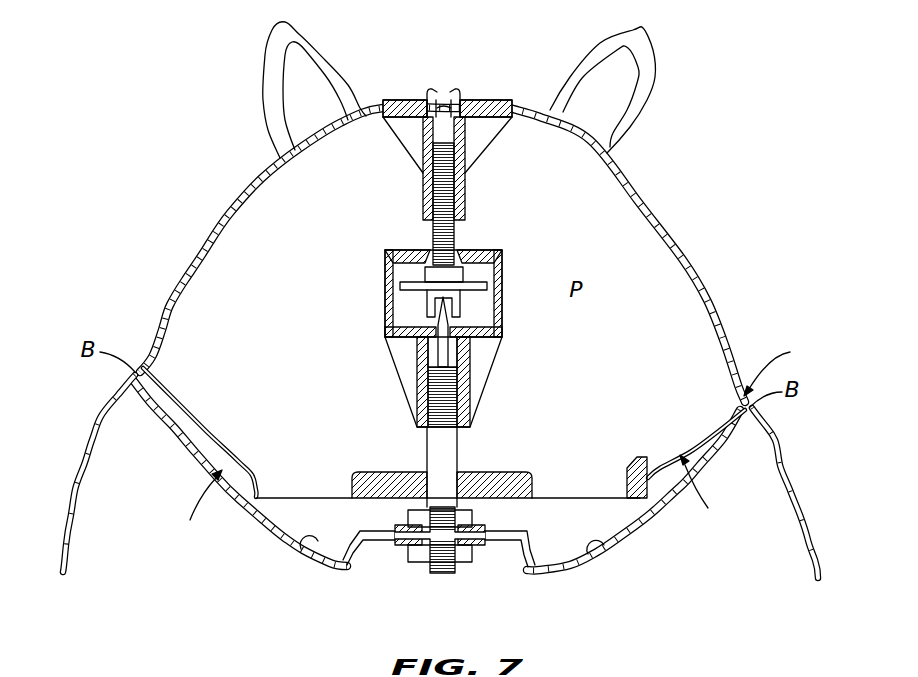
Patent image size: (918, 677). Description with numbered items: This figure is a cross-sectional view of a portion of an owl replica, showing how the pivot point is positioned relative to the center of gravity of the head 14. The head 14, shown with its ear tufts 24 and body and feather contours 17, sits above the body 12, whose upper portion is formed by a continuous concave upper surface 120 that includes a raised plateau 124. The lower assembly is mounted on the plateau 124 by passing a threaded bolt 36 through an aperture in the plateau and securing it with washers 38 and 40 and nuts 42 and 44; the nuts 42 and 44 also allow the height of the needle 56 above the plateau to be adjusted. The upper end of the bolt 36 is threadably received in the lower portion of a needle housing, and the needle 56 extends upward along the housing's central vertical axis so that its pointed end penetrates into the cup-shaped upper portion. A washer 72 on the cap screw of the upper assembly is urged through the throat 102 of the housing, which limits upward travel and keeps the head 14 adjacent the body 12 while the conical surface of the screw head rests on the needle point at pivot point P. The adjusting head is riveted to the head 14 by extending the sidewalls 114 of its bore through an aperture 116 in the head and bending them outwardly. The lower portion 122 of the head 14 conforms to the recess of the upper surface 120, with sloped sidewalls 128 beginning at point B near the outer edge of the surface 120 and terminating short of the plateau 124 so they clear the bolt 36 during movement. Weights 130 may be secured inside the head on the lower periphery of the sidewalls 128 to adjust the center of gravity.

The body 12 is at (805, 478).
The head 14 is at (703, 256).
The body and feather contours 17 is at (143, 355).
The ear tufts 24 is at (320, 56).
The threaded bolt 36 is at (442, 575).
The washer 38 is at (487, 530).
The washer 40 is at (470, 550).
The nut 42 is at (410, 520).
The nut 44 is at (412, 562).
The needle 56 is at (457, 352).
The washer 72 is at (483, 283).
The throat 102 is at (410, 262).
The sidewalls of the bore 114 is at (440, 92).
The aperture 116 is at (478, 104).
The concave upper surface 120 is at (300, 545).
The lower portion of the head 122 is at (790, 364).
The raised plateau 124 is at (530, 566).
The sloped sidewalls 128 is at (461, 498).
The weights 130 is at (505, 474).